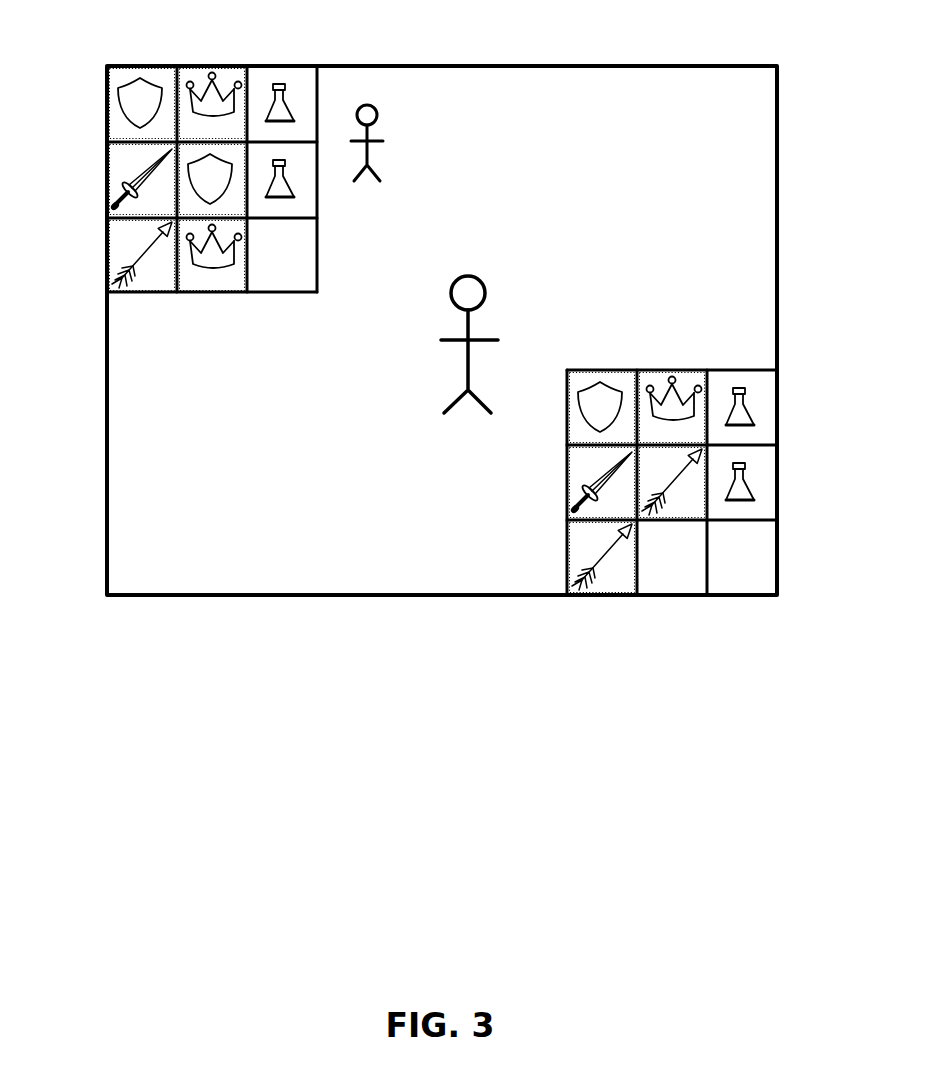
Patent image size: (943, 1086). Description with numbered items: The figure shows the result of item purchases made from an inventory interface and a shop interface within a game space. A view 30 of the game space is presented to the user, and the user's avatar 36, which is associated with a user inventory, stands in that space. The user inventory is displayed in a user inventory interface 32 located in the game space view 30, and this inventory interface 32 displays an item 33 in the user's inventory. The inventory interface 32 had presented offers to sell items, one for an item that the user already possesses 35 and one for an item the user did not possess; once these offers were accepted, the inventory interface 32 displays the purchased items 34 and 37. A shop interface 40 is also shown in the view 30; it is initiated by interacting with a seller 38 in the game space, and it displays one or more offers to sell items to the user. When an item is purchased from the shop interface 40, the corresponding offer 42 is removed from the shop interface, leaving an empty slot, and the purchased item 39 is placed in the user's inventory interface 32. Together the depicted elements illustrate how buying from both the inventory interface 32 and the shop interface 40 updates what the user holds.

The view 30 is at (777, 93).
The user inventory interface 32 is at (669, 484).
The item 33 is at (596, 512).
The purchased item 34 is at (765, 395).
The item that the user already possesses 35 is at (765, 485).
The avatar 36 is at (505, 320).
The purchased item 37 is at (683, 378).
The seller 38 is at (379, 98).
The item 39 is at (600, 572).
The shop interface 40 is at (267, 65).
The offer 42 is at (280, 283).